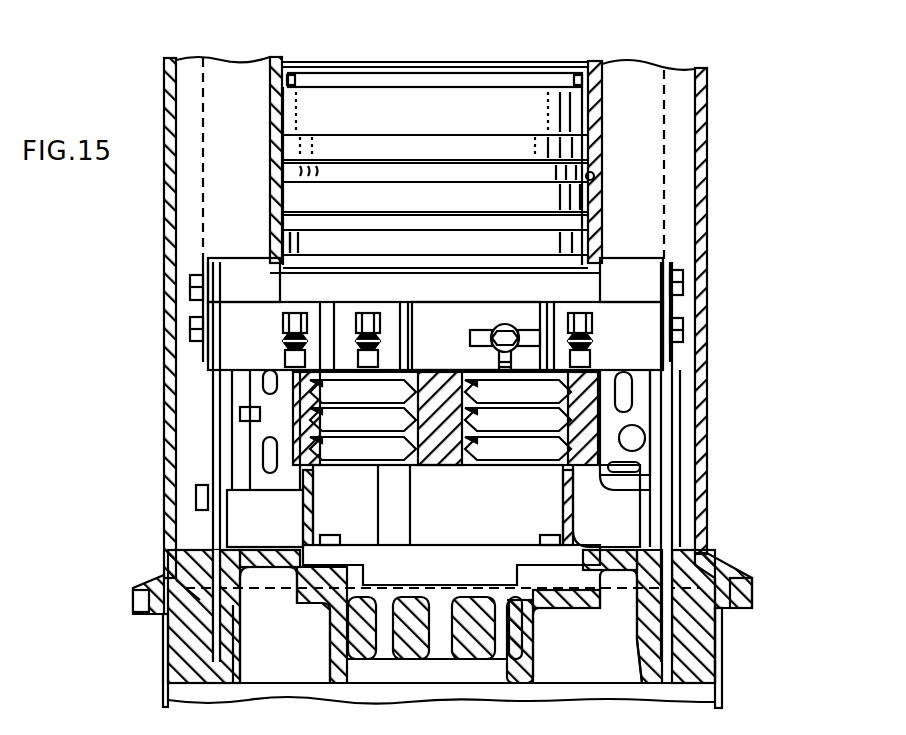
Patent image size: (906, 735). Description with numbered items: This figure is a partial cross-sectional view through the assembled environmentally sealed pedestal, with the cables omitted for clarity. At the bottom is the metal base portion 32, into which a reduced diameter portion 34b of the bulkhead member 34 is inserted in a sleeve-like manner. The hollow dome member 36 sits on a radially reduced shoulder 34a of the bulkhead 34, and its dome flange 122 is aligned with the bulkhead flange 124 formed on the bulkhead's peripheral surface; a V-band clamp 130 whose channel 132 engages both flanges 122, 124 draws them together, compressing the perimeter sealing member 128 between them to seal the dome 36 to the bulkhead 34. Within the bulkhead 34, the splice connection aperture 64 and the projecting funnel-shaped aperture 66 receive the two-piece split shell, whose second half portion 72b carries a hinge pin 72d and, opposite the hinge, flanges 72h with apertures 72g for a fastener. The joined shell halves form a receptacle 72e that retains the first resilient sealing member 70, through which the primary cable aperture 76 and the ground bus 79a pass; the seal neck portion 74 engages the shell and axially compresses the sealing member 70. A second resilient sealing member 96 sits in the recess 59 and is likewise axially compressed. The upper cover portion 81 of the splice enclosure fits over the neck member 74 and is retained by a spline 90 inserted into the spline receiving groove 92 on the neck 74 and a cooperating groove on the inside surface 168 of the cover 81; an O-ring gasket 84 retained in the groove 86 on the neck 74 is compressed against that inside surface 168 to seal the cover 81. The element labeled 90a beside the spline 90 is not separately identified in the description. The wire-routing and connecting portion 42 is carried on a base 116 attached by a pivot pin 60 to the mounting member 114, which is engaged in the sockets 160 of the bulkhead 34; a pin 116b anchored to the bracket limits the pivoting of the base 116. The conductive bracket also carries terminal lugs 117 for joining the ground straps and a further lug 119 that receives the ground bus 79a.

The base portion 32 is at (165, 684).
The bulkhead member 34 is at (175, 655).
The radially reduced shoulder 34a is at (712, 560).
The reduced diameter portion 34b is at (725, 652).
The hollow dome member 36 is at (170, 375).
The wire-routing and connecting portion 42 is at (187, 217).
The recess 59 is at (540, 625).
The pivot pin 60 is at (190, 330).
The splice connection aperture 64 is at (570, 500).
The projecting funnel-shaped aperture 66 is at (580, 518).
The first resilient sealing member 70 is at (432, 455).
The second half portion 72b is at (240, 421).
The hinge pin 72d is at (240, 412).
The receptacle 72e is at (265, 458).
The apertures 72g is at (635, 440).
The flanges 72h is at (645, 400).
The seal neck portion 74 is at (318, 112).
The primary cable aperture 76 is at (343, 455).
The ground bus 79a is at (497, 357).
The cover portion 81 is at (270, 80).
The gasket member 84 is at (297, 175).
The groove 86 is at (432, 162).
The spline 90 is at (297, 212).
The ring lip 90a is at (283, 219).
The spline receiving groove 92 is at (380, 217).
The second resilient sealing member 96 is at (525, 652).
The mounting member 114 is at (233, 684).
The base 116 is at (195, 300).
The pin 116b is at (192, 272).
The terminal lugs 117 is at (297, 312).
The further lug 119 is at (505, 324).
The dome flange 122 is at (165, 572).
The bulkhead flange 124 is at (140, 605).
The perimeter sealing member 128 is at (160, 580).
The V-band clamp 130 is at (150, 579).
The channel 132 is at (731, 578).
The sockets 160 is at (195, 632).
The inside surface 168 is at (597, 174).